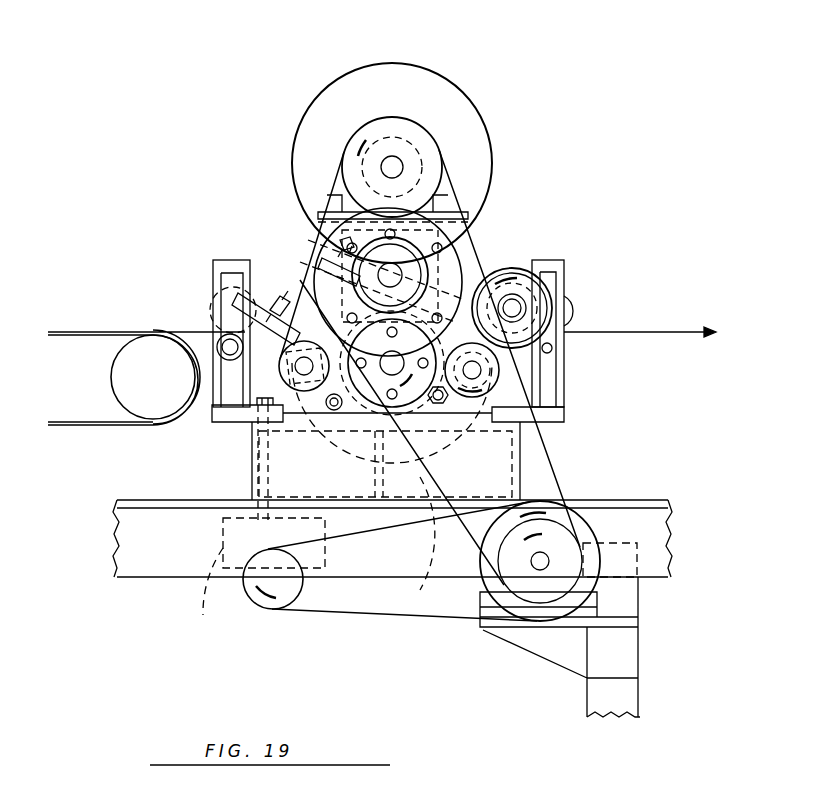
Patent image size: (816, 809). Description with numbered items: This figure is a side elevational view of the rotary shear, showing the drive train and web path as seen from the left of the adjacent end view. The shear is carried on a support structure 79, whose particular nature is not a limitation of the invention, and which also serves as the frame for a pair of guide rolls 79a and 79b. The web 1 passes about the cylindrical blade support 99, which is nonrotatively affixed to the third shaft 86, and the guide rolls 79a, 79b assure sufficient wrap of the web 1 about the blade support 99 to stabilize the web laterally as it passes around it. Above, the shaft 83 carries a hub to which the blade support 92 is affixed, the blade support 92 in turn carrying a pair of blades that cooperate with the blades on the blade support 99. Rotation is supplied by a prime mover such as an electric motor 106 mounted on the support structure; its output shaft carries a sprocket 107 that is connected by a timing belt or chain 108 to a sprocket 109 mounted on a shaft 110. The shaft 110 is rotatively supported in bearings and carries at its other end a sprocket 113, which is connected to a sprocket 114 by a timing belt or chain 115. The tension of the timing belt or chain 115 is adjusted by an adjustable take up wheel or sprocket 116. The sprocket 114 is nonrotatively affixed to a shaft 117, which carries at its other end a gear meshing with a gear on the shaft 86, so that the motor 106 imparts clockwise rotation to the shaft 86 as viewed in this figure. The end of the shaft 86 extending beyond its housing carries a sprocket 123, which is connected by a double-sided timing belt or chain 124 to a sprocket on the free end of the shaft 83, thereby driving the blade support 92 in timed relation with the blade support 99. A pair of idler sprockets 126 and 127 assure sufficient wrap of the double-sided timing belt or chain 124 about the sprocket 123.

The web 1 is at (678, 330).
The support structure 79 is at (645, 648).
The guide roll 79a is at (572, 316).
The guide roll 79b is at (212, 305).
The shaft 83 is at (398, 162).
The third shaft 86 is at (388, 367).
The blade support 92 is at (480, 158).
The blade support 99 is at (398, 555).
The motor 106 is at (317, 549).
The sprocket 107 is at (273, 610).
The timing belt or chain 108 is at (445, 620).
The sprocket 109 is at (575, 525).
The shaft 110 is at (542, 567).
The sprocket 113 is at (562, 560).
The sprocket 114 is at (470, 255).
The timing belt or chain 115 is at (550, 471).
The adjustable take up wheel or sprocket 116 is at (552, 295).
The shaft 117 is at (387, 285).
The sprocket 123 is at (410, 402).
The double-sided timing belt or chain 124 is at (447, 183).
The idler sprocket 126 is at (290, 382).
The idler sprocket 127 is at (493, 382).